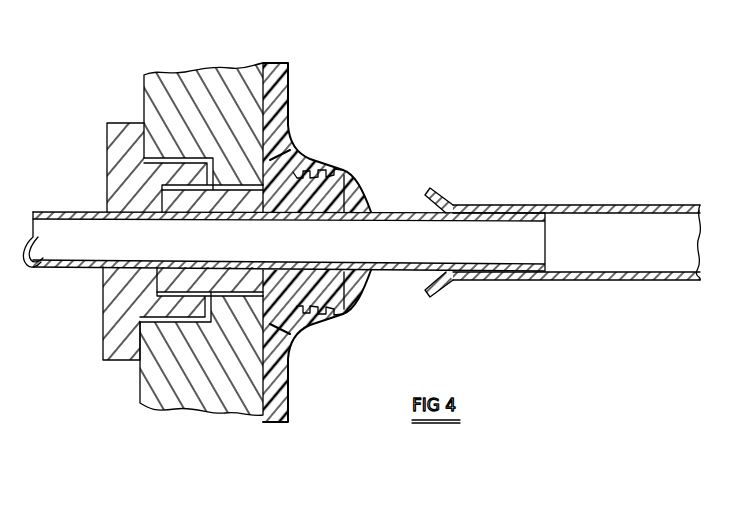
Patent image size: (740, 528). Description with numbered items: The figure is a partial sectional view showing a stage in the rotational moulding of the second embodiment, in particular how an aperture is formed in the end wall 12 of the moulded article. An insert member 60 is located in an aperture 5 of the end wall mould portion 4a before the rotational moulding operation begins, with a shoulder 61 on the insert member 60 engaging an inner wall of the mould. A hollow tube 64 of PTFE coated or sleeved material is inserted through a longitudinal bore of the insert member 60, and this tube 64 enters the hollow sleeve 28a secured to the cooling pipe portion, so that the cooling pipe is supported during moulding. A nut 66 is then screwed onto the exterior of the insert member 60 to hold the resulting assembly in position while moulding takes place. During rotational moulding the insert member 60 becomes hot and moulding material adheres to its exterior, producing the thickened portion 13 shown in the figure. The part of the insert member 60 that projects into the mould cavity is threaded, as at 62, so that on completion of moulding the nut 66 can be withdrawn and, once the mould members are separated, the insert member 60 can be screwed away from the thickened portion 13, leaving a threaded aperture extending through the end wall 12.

The end wall mould portion 4a is at (231, 68).
The end wall 12 is at (290, 93).
The shoulder 61 is at (290, 157).
The thickened portion 13 is at (319, 158).
The threaded part 62 is at (338, 176).
The insert member 60 is at (348, 195).
The nut 66 is at (117, 163).
The hollow tube 64 is at (88, 269).
The aperture 5 is at (231, 296).
The hollow sleeve 28a is at (500, 209).